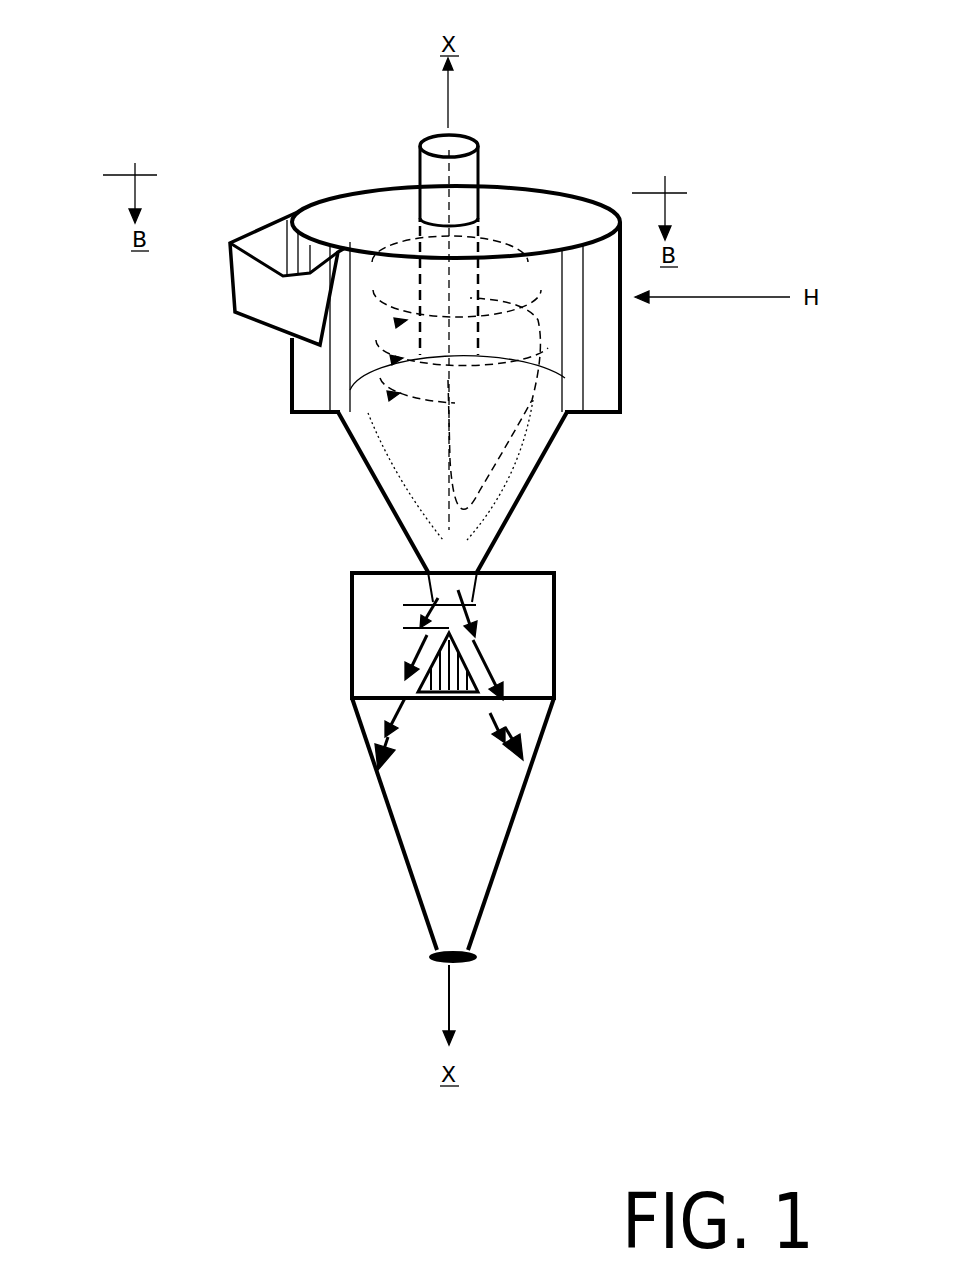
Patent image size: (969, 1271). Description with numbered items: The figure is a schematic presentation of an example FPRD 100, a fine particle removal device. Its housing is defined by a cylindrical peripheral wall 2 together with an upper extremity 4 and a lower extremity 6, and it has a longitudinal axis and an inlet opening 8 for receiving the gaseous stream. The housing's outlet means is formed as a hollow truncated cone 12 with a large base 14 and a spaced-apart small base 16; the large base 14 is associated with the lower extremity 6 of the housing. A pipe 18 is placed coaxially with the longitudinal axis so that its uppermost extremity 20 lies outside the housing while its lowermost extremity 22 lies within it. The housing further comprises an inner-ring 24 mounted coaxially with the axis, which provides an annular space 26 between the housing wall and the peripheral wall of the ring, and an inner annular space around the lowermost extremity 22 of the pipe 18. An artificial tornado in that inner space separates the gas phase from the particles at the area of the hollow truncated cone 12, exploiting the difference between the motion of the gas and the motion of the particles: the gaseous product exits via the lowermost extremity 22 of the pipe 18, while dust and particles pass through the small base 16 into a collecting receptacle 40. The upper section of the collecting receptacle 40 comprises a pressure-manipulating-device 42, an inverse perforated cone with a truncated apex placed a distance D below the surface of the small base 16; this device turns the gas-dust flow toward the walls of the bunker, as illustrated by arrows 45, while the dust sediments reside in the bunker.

The FPRD 100 is at (796, 75).
The cylindrical peripheral wall 2 is at (623, 363).
The upper extremity 4 is at (356, 192).
The lower extremity 6 is at (303, 413).
The inlet opening 8 is at (250, 283).
The hollow truncated cone 12 is at (362, 522).
The large base 14 is at (570, 415).
The small base of hollow truncated cone 16 is at (490, 560).
The pipe 18 is at (502, 155).
The uppermost extremity 20 is at (480, 148).
The lowermost extremity 22 is at (495, 372).
The inner-ring 24 is at (342, 357).
The annular space 26 is at (307, 388).
The collecting receptacle 40 is at (640, 750).
The pressure-manipulating-device 42 is at (485, 655).
The arrows 45 is at (507, 740).